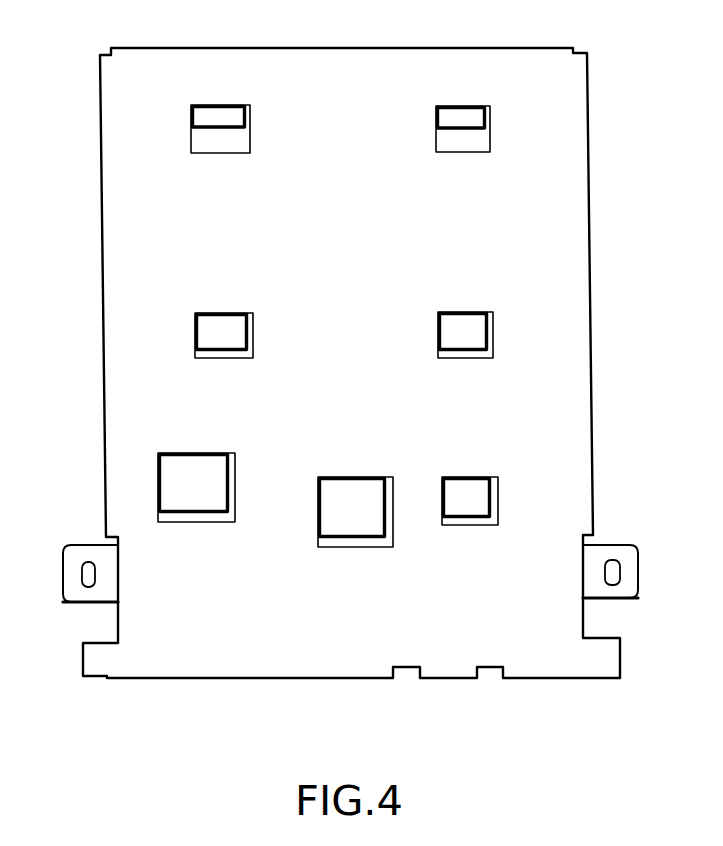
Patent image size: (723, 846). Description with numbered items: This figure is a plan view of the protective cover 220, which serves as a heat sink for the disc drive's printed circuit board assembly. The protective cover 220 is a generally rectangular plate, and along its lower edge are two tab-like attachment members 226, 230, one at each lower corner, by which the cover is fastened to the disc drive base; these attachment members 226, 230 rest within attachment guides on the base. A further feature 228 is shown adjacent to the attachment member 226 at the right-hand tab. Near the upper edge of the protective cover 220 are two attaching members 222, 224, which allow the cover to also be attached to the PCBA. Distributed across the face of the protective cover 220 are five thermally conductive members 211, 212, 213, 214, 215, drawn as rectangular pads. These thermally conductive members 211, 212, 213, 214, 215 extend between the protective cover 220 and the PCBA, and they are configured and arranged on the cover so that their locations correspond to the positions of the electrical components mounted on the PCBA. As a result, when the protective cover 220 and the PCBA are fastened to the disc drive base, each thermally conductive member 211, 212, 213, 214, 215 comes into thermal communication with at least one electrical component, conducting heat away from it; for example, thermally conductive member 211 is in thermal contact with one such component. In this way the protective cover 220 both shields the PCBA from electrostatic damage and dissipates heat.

The protective cover 220 is at (90, 155).
The thermally conductive member 211 is at (475, 490).
The thermally conductive member 212 is at (350, 520).
The thermally conductive member 213 is at (470, 327).
The thermally conductive member 214 is at (222, 331).
The thermally conductive member 215 is at (195, 480).
The attaching member 222 is at (468, 117).
The attaching member 224 is at (220, 117).
The attachment member 226 is at (626, 591).
The mounting tab 228 is at (618, 558).
The attachment member 230 is at (98, 591).